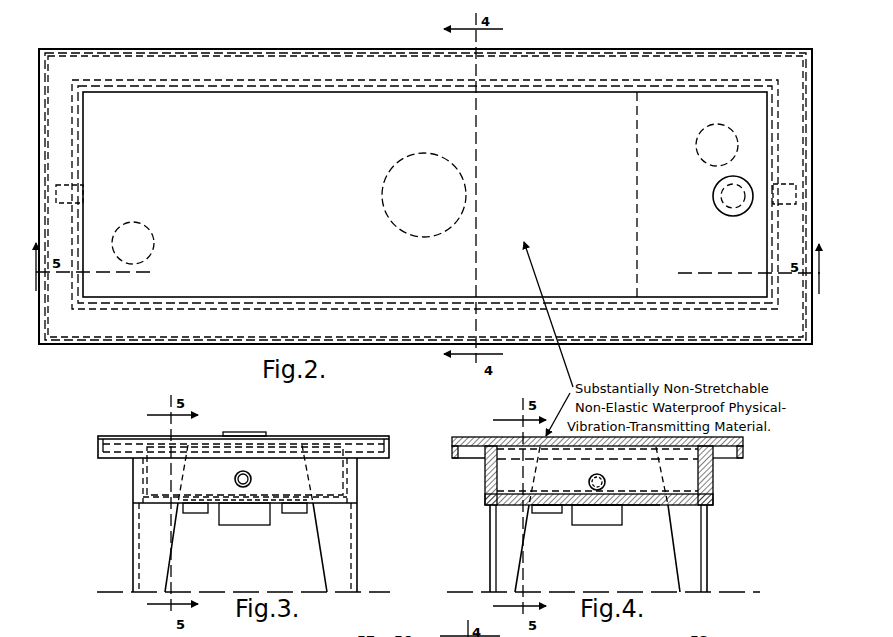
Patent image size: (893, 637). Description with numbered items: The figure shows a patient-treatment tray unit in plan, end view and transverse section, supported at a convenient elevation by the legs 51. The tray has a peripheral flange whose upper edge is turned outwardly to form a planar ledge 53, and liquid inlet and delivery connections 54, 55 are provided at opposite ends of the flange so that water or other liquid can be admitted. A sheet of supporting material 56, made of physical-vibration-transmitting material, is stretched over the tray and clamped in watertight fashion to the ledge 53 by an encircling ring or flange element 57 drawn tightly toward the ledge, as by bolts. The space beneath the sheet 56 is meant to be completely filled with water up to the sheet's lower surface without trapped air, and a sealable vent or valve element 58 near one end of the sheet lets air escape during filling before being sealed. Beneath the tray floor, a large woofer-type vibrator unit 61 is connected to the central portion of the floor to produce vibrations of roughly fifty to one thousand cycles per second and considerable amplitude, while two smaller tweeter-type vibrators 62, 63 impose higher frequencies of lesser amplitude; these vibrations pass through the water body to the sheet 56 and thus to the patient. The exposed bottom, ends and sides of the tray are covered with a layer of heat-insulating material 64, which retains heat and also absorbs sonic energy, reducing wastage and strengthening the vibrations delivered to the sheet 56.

In FIG. 3, the legs 51 is at (332, 549).
In FIG. 4, the legs 51 is at (693, 560).
In FIG. 3, the ledge 53 is at (372, 452).
In FIG. 4, the ledge 53 is at (478, 452).
In FIG. 2, the liquid inlet connection 54 is at (786, 184).
In FIG. 3, the liquid inlet connection 54 is at (252, 479).
In FIG. 2, the liquid delivery connection 55 is at (66, 185).
In FIG. 4, the liquid delivery connection 55 is at (589, 482).
In FIG. 2, the sheet of supporting material 56 is at (425, 194).
In FIG. 3, the sheet of supporting material 56 is at (245, 471).
In FIG. 4, the sheet of supporting material 56 is at (628, 449).
In FIG. 2, the encircling ring or flange element 57 is at (529, 70).
In FIG. 3, the encircling ring or flange element 57 is at (297, 436).
In FIG. 4, the encircling ring or flange element 57 is at (478, 440).
In FIG. 2, the sealable vent or valve element 58 is at (722, 198).
In FIG. 3, the sealable vent or valve element 58 is at (249, 433).
In FIG. 2, the vibrator unit 61 is at (382, 199).
In FIG. 3, the vibrator unit 61 is at (244, 515).
In FIG. 4, the vibrator unit 61 is at (595, 516).
In FIG. 2, the vibrator 62 is at (696, 142).
In FIG. 3, the vibrator 62 is at (290, 511).
In FIG. 2, the vibrator 63 is at (147, 226).
In FIG. 3, the vibrator 63 is at (192, 512).
In FIG. 4, the vibrator 63 is at (548, 515).
In FIG. 3, the heat-insulating material 64 is at (350, 499).
In FIG. 4, the heat-insulating material 64 is at (645, 506).